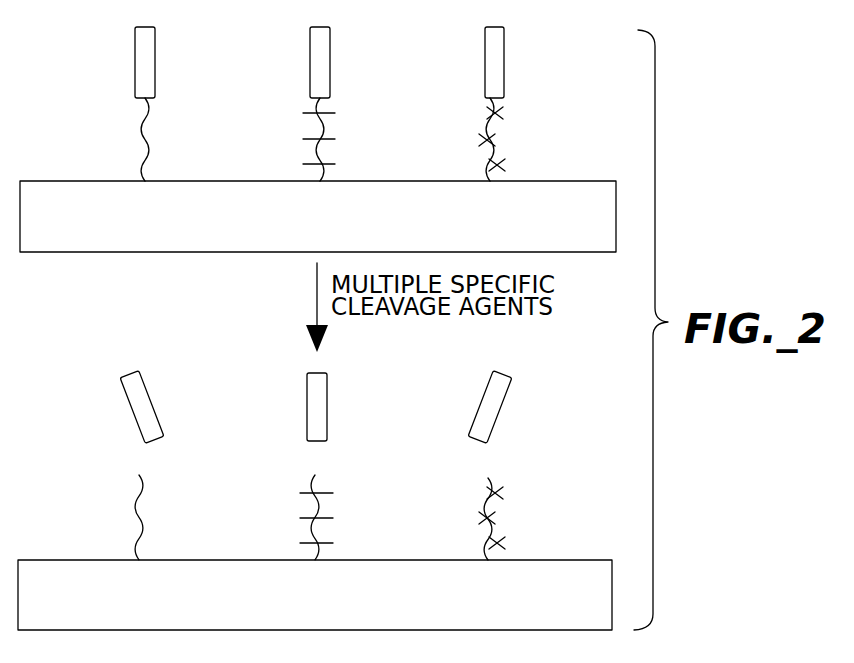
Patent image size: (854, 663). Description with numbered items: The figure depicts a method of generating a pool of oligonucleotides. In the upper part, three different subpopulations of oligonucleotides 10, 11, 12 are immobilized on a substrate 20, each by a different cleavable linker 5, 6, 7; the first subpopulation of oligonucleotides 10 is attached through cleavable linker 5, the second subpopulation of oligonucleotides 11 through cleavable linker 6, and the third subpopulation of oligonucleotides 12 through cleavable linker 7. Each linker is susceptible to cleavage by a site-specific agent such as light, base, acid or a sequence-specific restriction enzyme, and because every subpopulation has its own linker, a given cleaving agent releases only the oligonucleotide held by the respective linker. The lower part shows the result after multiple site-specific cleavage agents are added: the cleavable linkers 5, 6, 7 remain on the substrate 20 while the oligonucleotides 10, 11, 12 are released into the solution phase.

The cleavable linker 5 is at (146, 122).
The cleavable linker 6 is at (320, 122).
The cleavable linker 7 is at (492, 122).
The subpopulation of oligonucleotides 10 is at (135, 68).
The subpopulation of oligonucleotides 11 is at (310, 68).
The subpopulation of oligonucleotides 12 is at (485, 68).
The substrate 20 is at (85, 180).